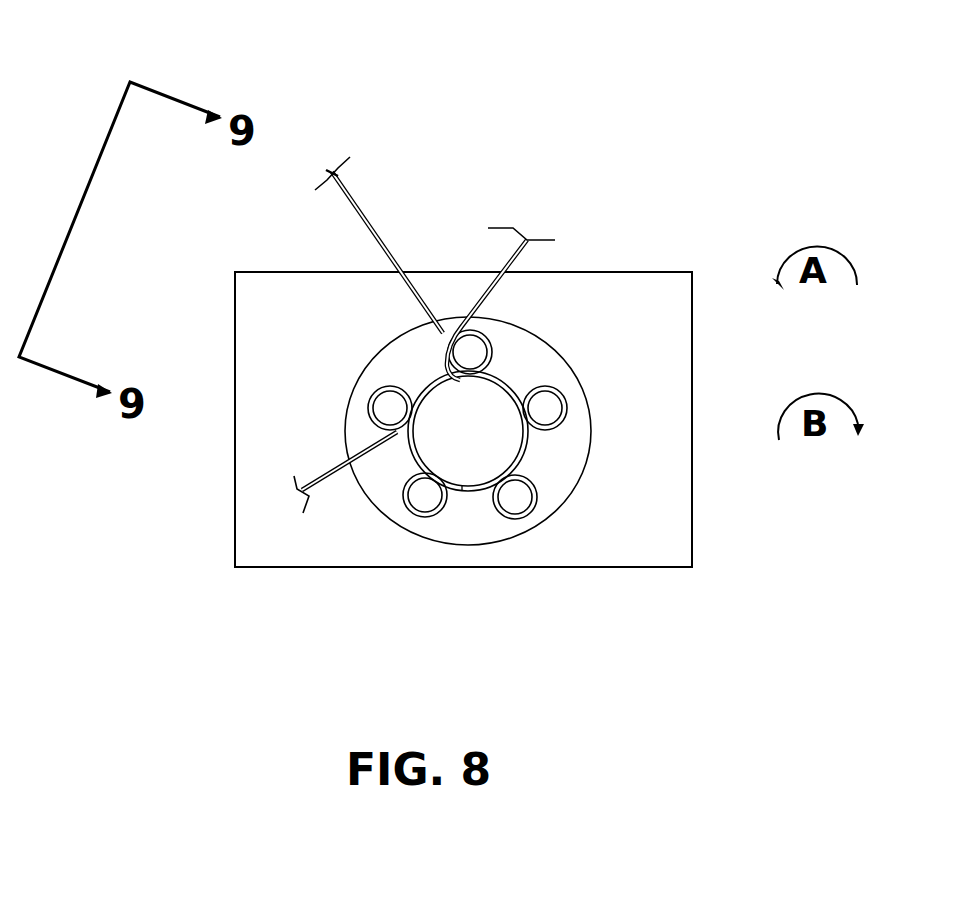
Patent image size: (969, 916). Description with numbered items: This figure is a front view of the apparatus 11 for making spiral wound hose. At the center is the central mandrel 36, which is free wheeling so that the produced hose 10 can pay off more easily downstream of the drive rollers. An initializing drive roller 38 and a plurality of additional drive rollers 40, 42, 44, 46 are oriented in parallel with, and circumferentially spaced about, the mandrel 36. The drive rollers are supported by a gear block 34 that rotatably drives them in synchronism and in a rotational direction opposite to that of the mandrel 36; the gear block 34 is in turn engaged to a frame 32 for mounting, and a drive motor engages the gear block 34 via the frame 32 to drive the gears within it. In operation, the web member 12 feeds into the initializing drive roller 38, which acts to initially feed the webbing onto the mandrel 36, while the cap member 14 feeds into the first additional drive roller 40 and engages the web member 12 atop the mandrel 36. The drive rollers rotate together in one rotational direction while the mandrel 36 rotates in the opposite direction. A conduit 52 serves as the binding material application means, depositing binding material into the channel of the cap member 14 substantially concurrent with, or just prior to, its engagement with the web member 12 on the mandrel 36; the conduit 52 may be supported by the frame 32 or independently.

The hose 10 is at (513, 388).
The apparatus 11 is at (577, 100).
The web member 12 is at (323, 475).
The cap member 14 is at (510, 252).
The frame 32 is at (463, 419).
The gear block 34 is at (582, 474).
The central mandrel 36 is at (468, 433).
The initializing drive roller 38 is at (383, 400).
The first additional drive roller 40 is at (478, 345).
The additional drive roller 42 is at (558, 410).
The additional drive roller 44 is at (517, 500).
The additional drive roller 46 is at (412, 500).
The conduit 52 is at (377, 232).